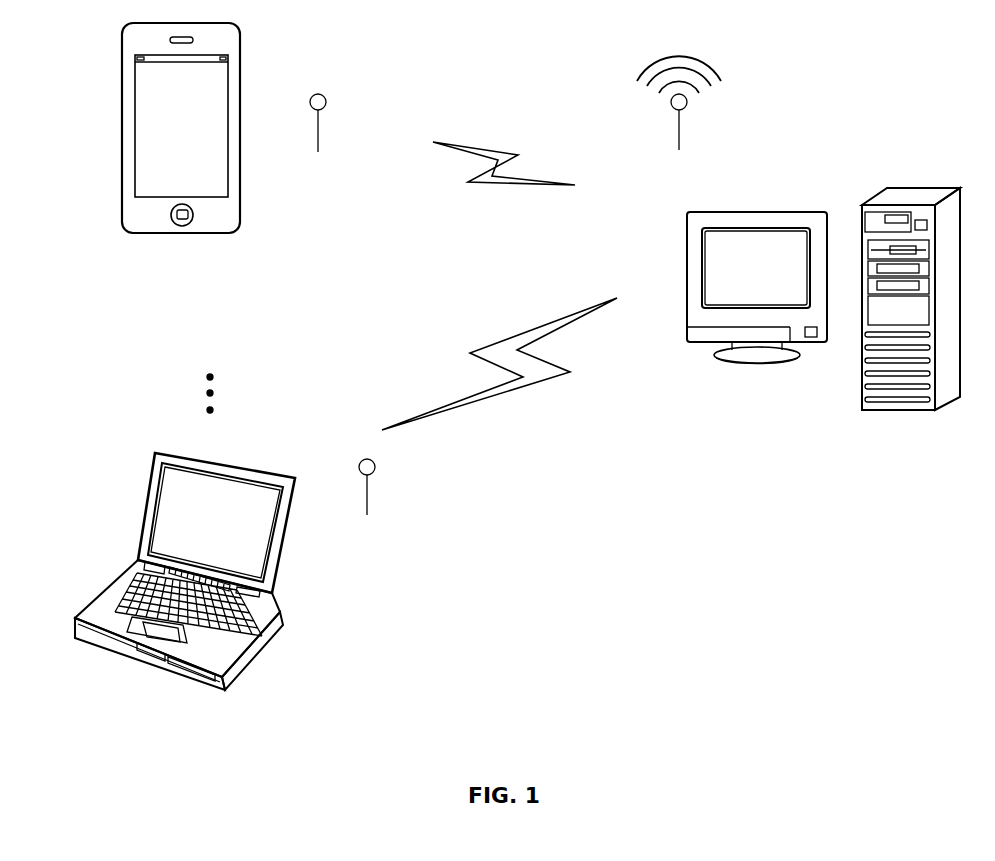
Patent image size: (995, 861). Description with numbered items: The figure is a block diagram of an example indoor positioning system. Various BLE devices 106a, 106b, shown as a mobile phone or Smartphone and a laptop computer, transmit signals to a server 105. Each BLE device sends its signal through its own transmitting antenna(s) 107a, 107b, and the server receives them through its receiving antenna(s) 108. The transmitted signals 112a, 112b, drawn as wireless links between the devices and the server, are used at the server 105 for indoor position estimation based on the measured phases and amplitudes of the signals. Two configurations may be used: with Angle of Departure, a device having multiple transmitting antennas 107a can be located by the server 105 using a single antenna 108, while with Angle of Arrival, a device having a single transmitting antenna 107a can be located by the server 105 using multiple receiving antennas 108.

The server 105 is at (767, 432).
The BLE device 106a is at (182, 280).
The BLE device 106b is at (182, 736).
The transmitting antenna(s) 107a is at (350, 147).
The transmitting antenna(s) 107b is at (372, 553).
The receiving antenna(s) 108 is at (728, 148).
The transmitted signal 112a is at (478, 148).
The transmitted signal 112b is at (530, 330).